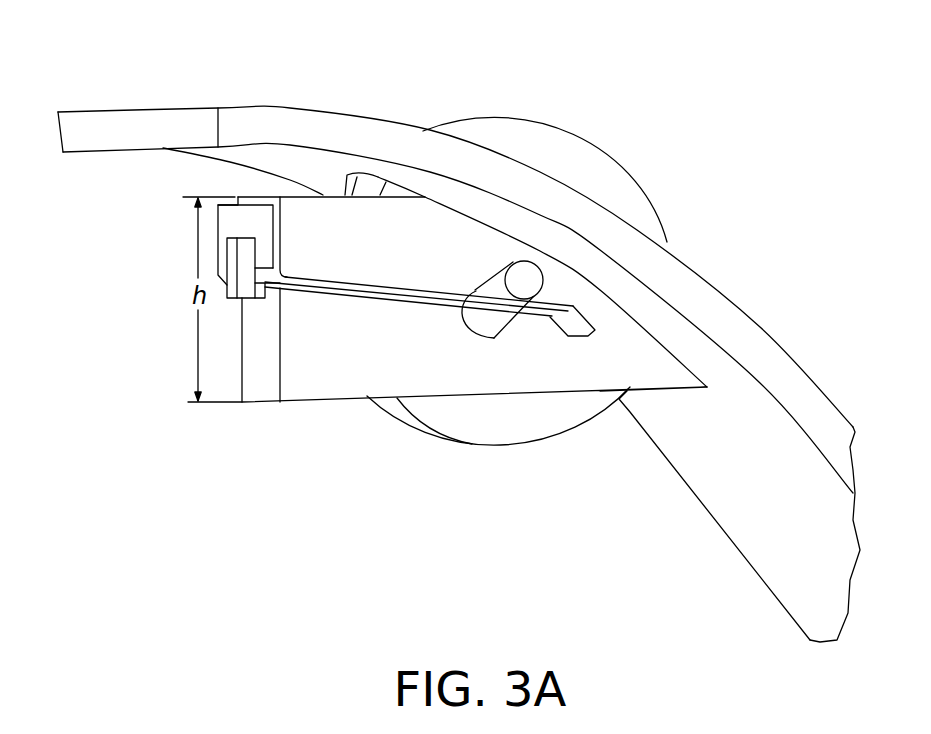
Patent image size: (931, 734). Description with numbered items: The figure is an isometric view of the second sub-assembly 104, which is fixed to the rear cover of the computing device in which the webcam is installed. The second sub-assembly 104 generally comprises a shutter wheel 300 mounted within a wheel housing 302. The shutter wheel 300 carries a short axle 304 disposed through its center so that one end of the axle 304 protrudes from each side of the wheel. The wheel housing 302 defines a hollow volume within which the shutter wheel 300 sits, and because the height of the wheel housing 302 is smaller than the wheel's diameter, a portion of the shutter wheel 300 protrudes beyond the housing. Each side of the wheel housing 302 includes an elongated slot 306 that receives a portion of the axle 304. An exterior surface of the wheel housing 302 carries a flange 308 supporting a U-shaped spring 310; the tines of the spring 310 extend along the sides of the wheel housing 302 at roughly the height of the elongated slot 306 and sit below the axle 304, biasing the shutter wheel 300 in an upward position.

The second sub-assembly 104 is at (116, 89).
The shutter wheel 300 is at (640, 142).
The wheel housing 302 is at (440, 380).
The axle 304 is at (524, 280).
The elongated slot 306 is at (490, 317).
The flange 308 is at (258, 306).
The spring 310 is at (365, 292).